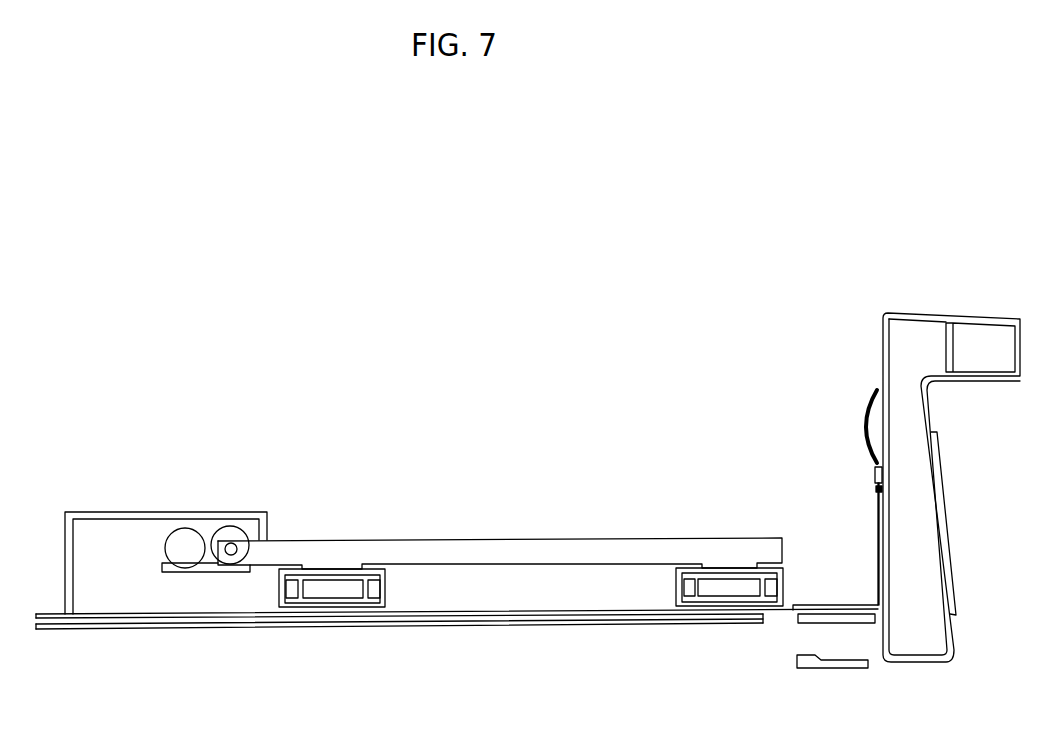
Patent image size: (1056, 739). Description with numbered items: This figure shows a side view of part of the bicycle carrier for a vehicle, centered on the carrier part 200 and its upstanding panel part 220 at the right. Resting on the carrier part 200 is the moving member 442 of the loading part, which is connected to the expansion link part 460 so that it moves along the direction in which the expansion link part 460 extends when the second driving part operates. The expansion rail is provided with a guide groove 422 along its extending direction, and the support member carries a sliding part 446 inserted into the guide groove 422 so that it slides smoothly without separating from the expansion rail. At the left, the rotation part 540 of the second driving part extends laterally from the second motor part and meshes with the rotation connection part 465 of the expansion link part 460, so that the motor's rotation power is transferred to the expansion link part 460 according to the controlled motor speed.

The carrier part 200 is at (645, 624).
The panel part 220 is at (918, 493).
The moving member 442 is at (477, 550).
The sliding part 446 is at (307, 578).
The guide groove 422 is at (377, 583).
The expansion link part 460 is at (233, 555).
The rotation connection part 465 is at (233, 535).
The rotation part 540 is at (182, 535).